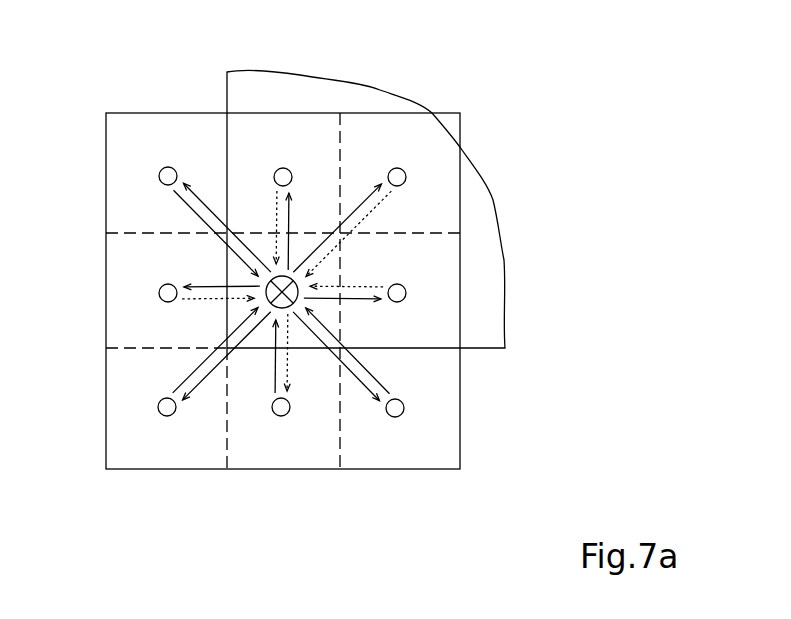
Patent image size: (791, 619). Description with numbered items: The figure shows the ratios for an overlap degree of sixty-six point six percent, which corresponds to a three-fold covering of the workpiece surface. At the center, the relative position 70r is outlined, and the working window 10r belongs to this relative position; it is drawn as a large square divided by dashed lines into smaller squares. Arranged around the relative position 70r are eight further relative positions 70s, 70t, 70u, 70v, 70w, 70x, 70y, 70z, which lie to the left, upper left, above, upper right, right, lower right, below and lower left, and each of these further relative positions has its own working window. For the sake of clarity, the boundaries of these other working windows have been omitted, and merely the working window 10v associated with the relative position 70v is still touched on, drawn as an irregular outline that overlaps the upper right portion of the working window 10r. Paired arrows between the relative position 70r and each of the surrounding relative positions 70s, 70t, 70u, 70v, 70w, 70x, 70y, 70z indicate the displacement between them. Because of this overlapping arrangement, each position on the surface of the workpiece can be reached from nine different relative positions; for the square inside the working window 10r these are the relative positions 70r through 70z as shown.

The working window 10r is at (104, 428).
The working window 10v is at (227, 86).
The relative position 70r is at (292, 306).
The relative position 70s is at (159, 293).
The relative position 70t is at (159, 176).
The relative position 70u is at (283, 168).
The relative position 70v is at (405, 173).
The relative position 70w is at (406, 292).
The relative position 70x is at (404, 404).
The relative position 70y is at (281, 416).
The relative position 70z is at (167, 416).